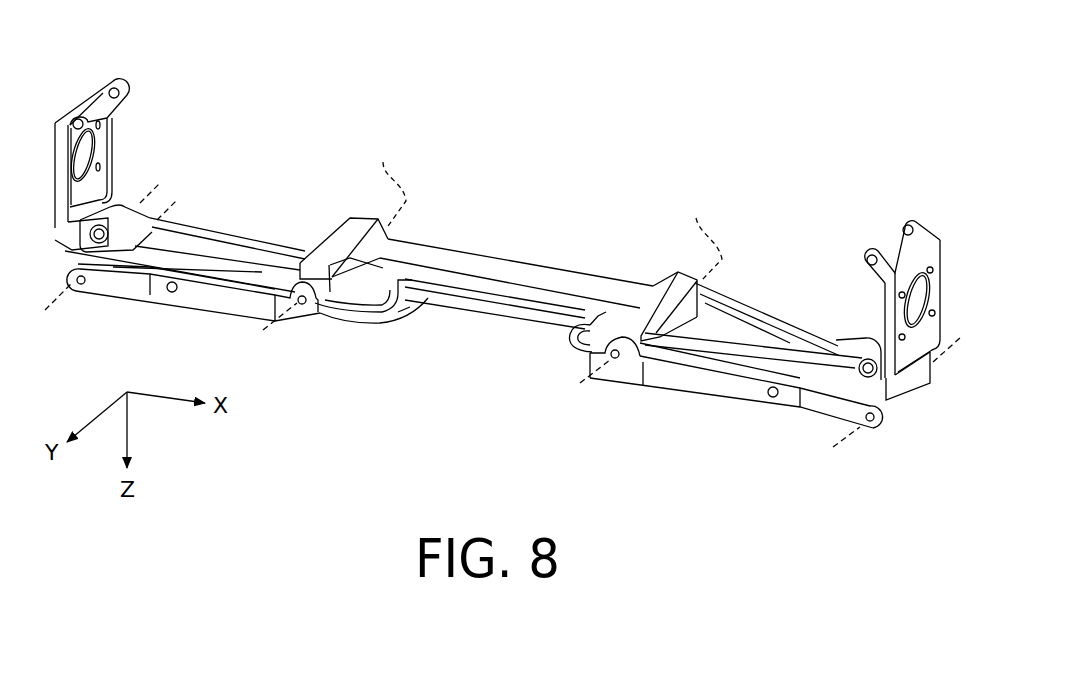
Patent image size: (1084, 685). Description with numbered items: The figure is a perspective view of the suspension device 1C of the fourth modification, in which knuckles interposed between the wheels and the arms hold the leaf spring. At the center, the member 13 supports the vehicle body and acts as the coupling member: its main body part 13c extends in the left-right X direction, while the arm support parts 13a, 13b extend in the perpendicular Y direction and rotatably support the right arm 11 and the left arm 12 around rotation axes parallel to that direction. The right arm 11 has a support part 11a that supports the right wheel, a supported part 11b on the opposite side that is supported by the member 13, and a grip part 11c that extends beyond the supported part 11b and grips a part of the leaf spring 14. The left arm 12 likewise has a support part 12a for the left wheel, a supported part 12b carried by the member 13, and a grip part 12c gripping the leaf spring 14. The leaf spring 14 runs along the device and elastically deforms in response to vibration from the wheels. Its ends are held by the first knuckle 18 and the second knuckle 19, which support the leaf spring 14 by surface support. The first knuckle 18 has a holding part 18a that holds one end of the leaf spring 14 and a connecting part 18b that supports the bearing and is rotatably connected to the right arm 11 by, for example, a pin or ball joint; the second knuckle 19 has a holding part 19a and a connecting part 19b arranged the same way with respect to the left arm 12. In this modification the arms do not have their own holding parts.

The suspension device 1C is at (528, 207).
The right arm 11 is at (307, 216).
The support part 11a is at (193, 297).
The supported part 11b is at (310, 316).
The grip part 11c is at (367, 318).
The left arm 12 is at (763, 296).
The support part 12a is at (697, 386).
The supported part 12b is at (623, 371).
The grip part 12c is at (574, 358).
The member 13 is at (458, 246).
The arm support part 13a is at (362, 226).
The arm support part 13b is at (675, 279).
The main body part 13c is at (560, 281).
The leaf spring 14 is at (468, 304).
The first knuckle 18 is at (89, 85).
The holding part 18a is at (124, 218).
The connecting part 18b is at (101, 132).
The second knuckle 19 is at (921, 207).
The holding part 19a is at (860, 344).
The connecting part 19b is at (920, 352).